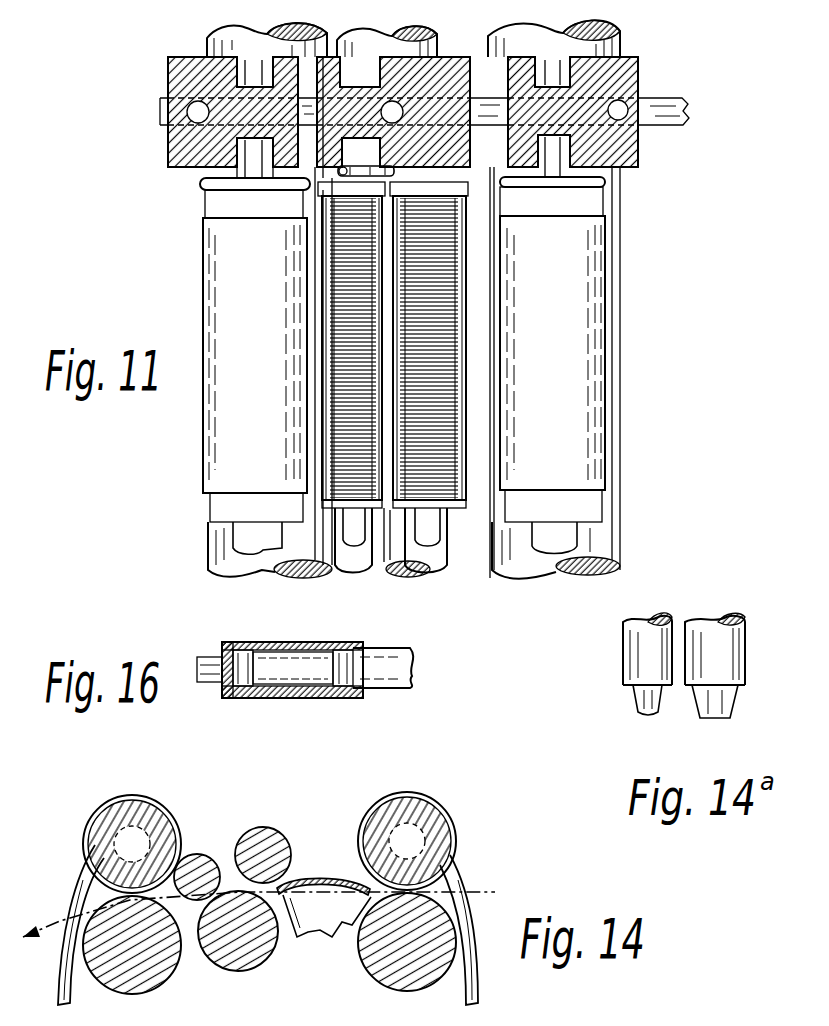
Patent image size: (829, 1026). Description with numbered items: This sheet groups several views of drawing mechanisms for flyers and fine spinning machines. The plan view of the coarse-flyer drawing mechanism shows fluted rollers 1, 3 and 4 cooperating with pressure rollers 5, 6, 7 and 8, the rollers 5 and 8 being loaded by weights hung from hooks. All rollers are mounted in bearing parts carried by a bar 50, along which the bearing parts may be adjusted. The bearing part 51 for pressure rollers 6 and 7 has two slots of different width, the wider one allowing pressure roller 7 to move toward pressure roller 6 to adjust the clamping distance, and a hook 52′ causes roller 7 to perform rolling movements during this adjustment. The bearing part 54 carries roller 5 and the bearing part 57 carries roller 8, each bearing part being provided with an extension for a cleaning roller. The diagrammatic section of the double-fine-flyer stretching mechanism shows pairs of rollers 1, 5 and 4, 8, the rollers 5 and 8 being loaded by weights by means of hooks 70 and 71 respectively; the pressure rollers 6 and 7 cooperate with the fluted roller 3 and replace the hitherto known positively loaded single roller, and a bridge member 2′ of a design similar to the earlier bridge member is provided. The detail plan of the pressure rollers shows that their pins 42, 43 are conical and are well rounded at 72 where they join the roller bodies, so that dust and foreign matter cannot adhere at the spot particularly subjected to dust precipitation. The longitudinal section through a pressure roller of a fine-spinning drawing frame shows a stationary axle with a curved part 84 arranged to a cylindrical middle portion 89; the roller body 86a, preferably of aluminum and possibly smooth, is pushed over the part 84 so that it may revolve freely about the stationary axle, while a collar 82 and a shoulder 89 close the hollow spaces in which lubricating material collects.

In FIG. 11, the fluted roller 1 is at (607, 536).
In FIG. 14, the fluted roller 1 is at (372, 968).
In FIG. 14, the bridge member 2′ is at (313, 880).
In FIG. 11, the fluted roller 3 is at (386, 301).
In FIG. 14, the fluted roller 3 is at (249, 964).
In FIG. 11, the fluted roller 4 is at (212, 541).
In FIG. 14, the fluted roller 4 is at (147, 984).
In FIG. 11, the pressure roller 5 is at (554, 299).
In FIG. 14, the pressure roller 5 is at (442, 814).
In FIG. 11, the pressure roller 6 is at (452, 376).
In FIG. 14A, the pressure roller 6 is at (726, 617).
In FIG. 14, the pressure roller 6 is at (284, 842).
In FIG. 11, the pressure roller 7 is at (346, 380).
In FIG. 14A, the pressure roller 7 is at (653, 632).
In FIG. 14, the pressure roller 7 is at (200, 855).
In FIG. 11, the pressure roller 8 is at (225, 40).
In FIG. 14, the pressure roller 8 is at (92, 820).
In FIG. 14A, the pin 42 is at (649, 716).
In FIG. 14A, the pin 43 is at (718, 710).
In FIG. 11, the bar 50 is at (660, 115).
In FIG. 11, the bearing part 51 is at (453, 58).
In FIG. 11, the hook 52′ is at (336, 172).
In FIG. 11, the bearing part 54 is at (638, 58).
In FIG. 11, the bearing part 57 is at (172, 68).
In FIG. 14, the hook 70 is at (480, 996).
In FIG. 14, the hook 71 is at (66, 1000).
In FIG. 14A, the rounded junction 72 is at (633, 687).
In FIG. 16, the collar 82 is at (225, 652).
In FIG. 16, the curved part 84 is at (327, 688).
In FIG. 16, the roller body 86a is at (347, 644).
In FIG. 16, the cylindrical middle portion 89 is at (401, 654).